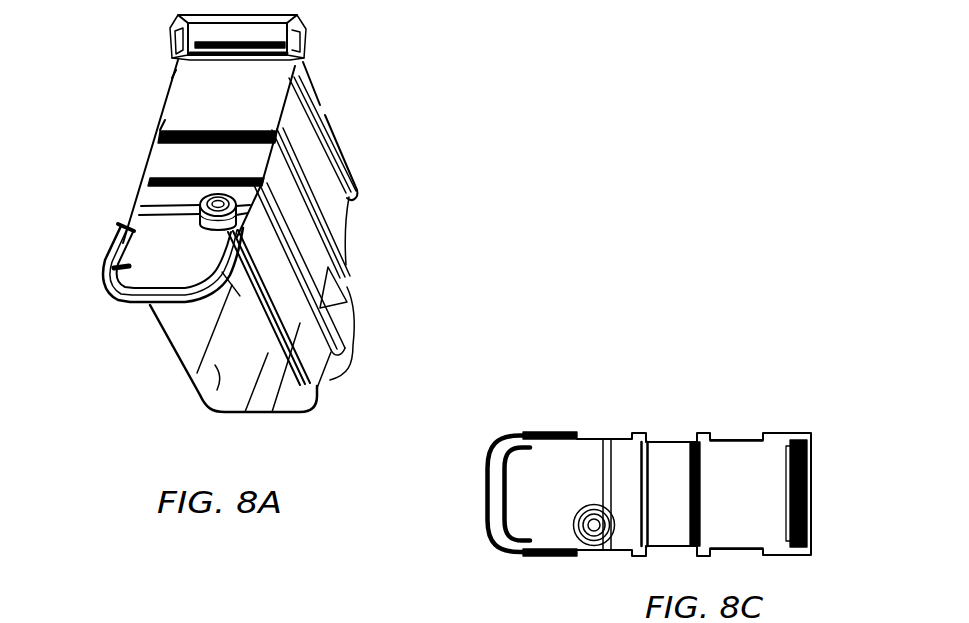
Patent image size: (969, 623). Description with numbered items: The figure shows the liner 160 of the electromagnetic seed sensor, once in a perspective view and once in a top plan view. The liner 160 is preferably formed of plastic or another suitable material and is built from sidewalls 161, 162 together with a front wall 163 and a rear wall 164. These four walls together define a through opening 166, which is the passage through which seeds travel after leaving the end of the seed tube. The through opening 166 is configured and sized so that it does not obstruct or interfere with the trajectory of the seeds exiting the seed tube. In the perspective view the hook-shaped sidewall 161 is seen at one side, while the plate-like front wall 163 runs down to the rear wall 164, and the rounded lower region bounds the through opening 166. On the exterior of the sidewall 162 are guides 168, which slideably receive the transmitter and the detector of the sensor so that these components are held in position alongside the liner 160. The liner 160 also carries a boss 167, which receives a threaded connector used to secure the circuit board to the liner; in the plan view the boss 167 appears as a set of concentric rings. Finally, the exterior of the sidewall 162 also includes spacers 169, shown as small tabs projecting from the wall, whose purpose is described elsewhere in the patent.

In FIG. 8A, the liner 160 is at (459, 151).
In FIG. 8C, the liner 160 is at (658, 394).
In FIG. 8A, the sidewall 161 is at (178, 338).
In FIG. 8C, the sidewall 161 is at (533, 494).
In FIG. 8A, the sidewall 162 is at (330, 204).
In FIG. 8A, the front wall 163 is at (205, 105).
In FIG. 8C, the front wall 163 is at (738, 467).
In FIG. 8A, the rear wall 164 is at (282, 400).
In FIG. 8A, the through opening 166 is at (205, 400).
In FIG. 8A, the boss 167 is at (197, 233).
In FIG. 8C, the boss 167 is at (593, 547).
In FIG. 8A, the guides 168 is at (160, 133).
In FIG. 8C, the guides 168 is at (697, 436).
In FIG. 8A, the spacers 169 is at (340, 305).